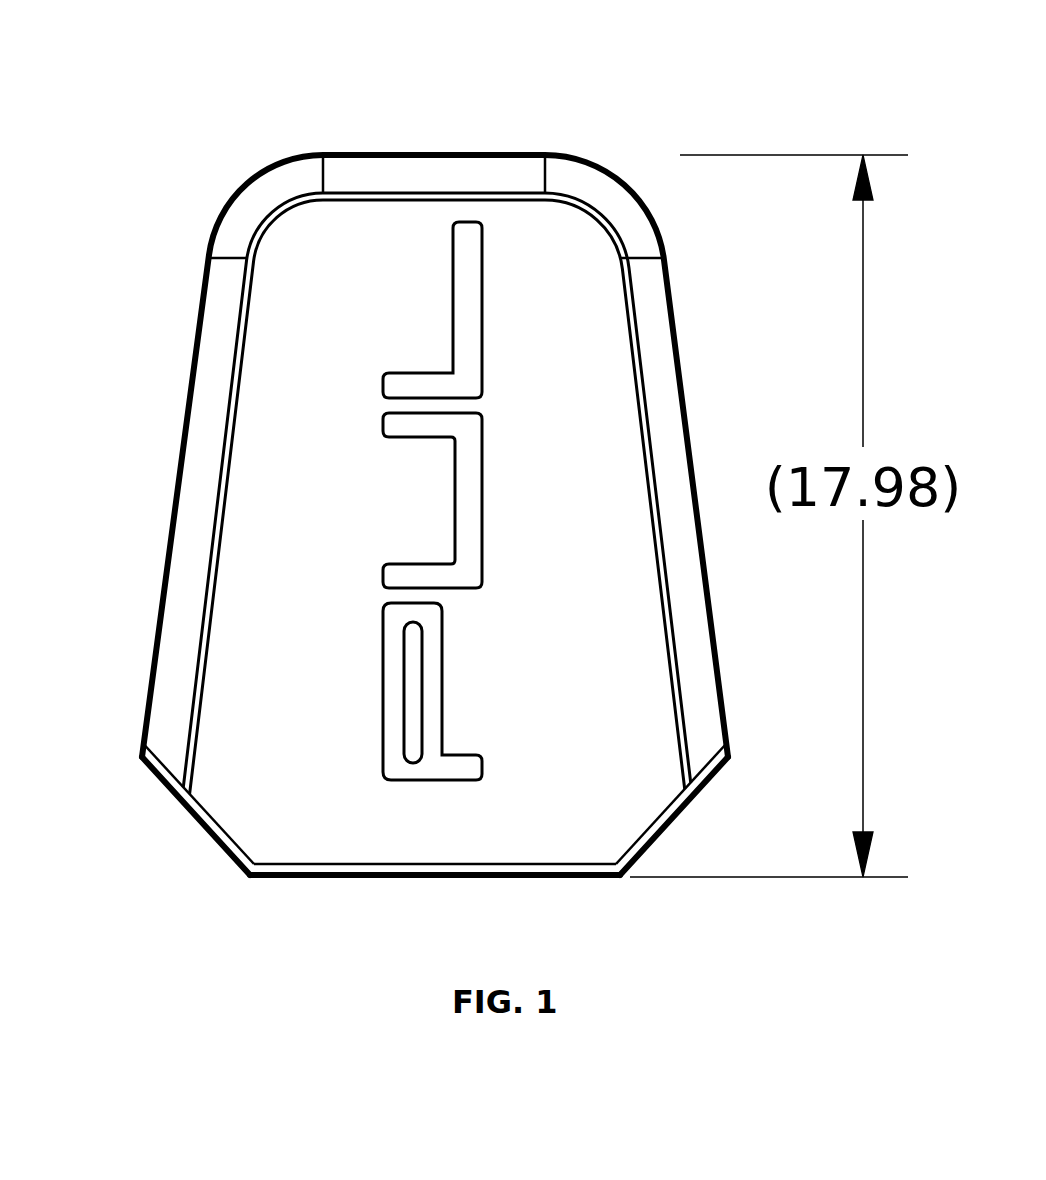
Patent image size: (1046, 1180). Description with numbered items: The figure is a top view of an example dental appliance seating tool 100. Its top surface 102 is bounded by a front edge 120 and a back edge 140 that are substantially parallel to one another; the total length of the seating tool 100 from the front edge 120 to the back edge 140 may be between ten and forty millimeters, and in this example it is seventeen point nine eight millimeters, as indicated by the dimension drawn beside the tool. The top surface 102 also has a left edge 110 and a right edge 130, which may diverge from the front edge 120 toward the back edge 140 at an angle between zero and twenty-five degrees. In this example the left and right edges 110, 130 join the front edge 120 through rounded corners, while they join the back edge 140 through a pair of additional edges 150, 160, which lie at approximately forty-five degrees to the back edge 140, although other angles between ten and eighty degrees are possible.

The dental appliance seating tool 100 is at (416, 481).
The top surface 102 is at (262, 553).
The left edge 110 is at (673, 303).
The front edge 120 is at (405, 152).
The right edge 130 is at (195, 327).
The back edge 140 is at (350, 878).
The additional edge 150 is at (182, 797).
The additional edge 160 is at (688, 803).